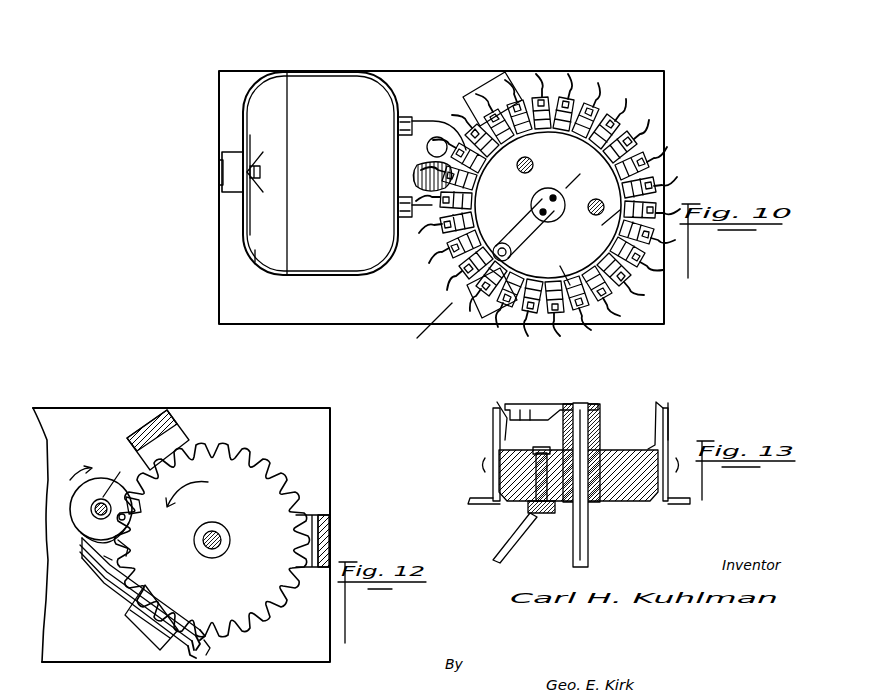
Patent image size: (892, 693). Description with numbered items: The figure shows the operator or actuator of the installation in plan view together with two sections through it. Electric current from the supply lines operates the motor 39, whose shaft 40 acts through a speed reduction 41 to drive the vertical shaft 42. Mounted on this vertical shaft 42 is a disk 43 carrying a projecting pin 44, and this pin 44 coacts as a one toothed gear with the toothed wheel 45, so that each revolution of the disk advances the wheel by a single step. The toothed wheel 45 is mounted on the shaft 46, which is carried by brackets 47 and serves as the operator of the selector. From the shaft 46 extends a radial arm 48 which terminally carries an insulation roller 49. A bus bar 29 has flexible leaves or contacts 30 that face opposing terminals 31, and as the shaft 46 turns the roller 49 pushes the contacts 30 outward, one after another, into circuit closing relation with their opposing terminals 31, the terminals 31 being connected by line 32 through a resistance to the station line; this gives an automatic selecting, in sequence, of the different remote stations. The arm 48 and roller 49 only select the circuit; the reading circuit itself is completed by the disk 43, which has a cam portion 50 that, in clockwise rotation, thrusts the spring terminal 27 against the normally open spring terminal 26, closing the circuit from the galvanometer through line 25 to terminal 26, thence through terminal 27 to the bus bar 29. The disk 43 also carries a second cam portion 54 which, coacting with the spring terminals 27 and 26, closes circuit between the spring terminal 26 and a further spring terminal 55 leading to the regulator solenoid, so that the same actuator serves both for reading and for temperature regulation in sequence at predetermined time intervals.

In FIG. 12, the line 25 is at (208, 646).
In FIG. 12, the switch terminal 26 is at (92, 572).
In FIG. 12, the switch terminal 27 is at (107, 558).
In FIG. 10, the bus bar 29 is at (584, 150).
In FIG. 13, the bus bar 29 is at (650, 503).
In FIG. 10, the leaves 30 is at (601, 226).
In FIG. 13, the leaves 30 is at (497, 410).
In FIG. 10, the opposing terminals 31 is at (559, 270).
In FIG. 13, the opposing terminals 31 is at (497, 412).
In FIG. 10, the line 32 is at (637, 127).
In FIG. 13, the line 32 is at (476, 498).
In FIG. 10, the motor 39 is at (308, 83).
In FIG. 10, the shaft 40 is at (222, 180).
In FIG. 10, the speed reduction 41 is at (418, 165).
In FIG. 12, the vertical shaft 42 is at (113, 476).
In FIG. 12, the disk 43 is at (72, 512).
In FIG. 12, the projecting pin 44 is at (108, 519).
In FIG. 12, the toothed wheel 45 is at (238, 477).
In FIG. 10, the shaft 46 is at (531, 201).
In FIG. 12, the shaft 46 is at (226, 549).
In FIG. 13, the shaft 46 is at (573, 537).
In FIG. 10, the brackets 47 is at (495, 88).
In FIG. 12, the brackets 47 is at (130, 432).
In FIG. 13, the brackets 47 is at (512, 533).
In FIG. 10, the arm 48 is at (538, 226).
In FIG. 13, the arm 48 is at (550, 404).
In FIG. 10, the insulation roller 49 is at (512, 253).
In FIG. 13, the insulation roller 49 is at (515, 420).
In FIG. 12, the cam portion 50 is at (125, 548).
In FIG. 12, the second cam portion 54 is at (142, 506).
In FIG. 12, the spring terminal 55 is at (87, 562).